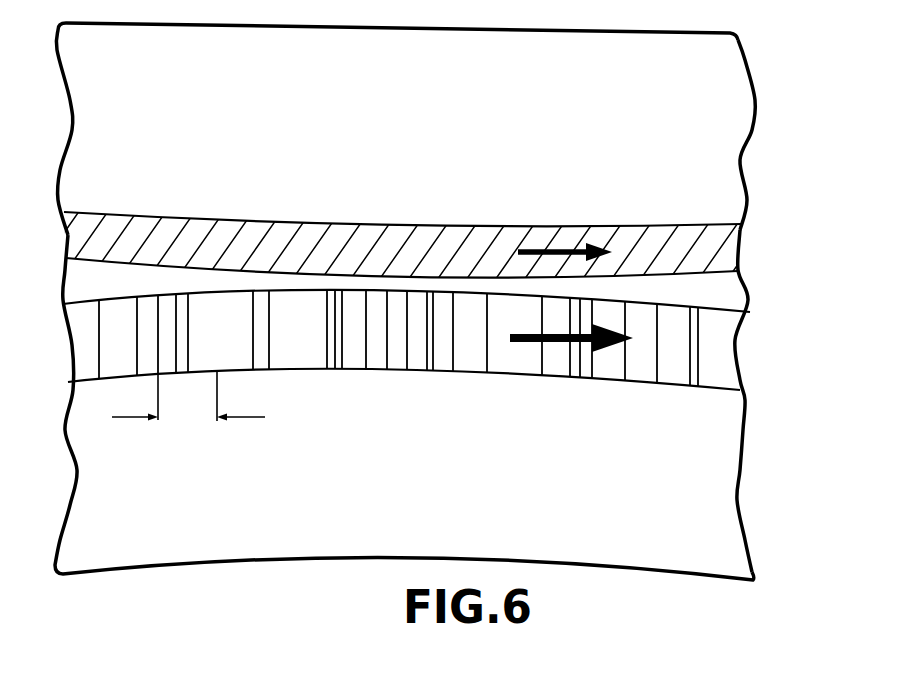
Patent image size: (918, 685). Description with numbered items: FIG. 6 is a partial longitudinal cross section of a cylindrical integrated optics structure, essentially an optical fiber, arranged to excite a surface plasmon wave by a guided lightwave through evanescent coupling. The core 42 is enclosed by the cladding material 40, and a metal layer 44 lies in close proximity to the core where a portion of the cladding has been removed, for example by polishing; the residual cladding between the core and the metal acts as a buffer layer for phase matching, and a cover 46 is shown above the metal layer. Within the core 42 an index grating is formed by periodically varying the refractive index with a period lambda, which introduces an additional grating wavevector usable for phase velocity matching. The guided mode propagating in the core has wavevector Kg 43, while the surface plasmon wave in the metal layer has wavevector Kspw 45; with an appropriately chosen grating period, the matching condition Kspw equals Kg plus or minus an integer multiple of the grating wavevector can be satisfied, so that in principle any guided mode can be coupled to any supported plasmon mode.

The cladding material 40 is at (521, 499).
The core 42 is at (722, 333).
The guided mode propagation vector Kg 43 is at (558, 346).
The metal layer 44 is at (740, 228).
The surface plasmon wave propagation vector Kspw 45 is at (567, 247).
The cover 46 is at (518, 112).